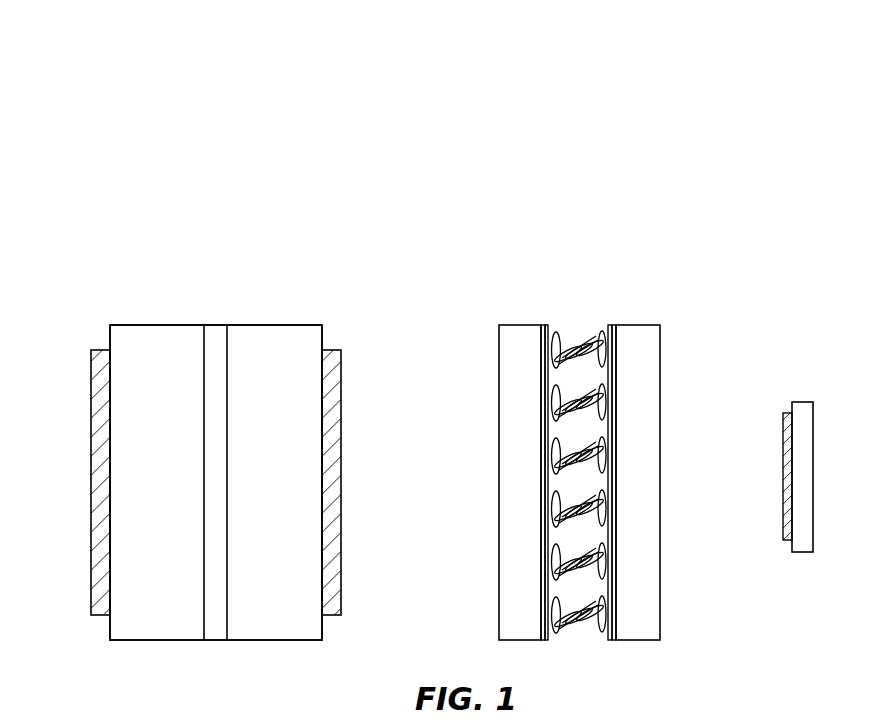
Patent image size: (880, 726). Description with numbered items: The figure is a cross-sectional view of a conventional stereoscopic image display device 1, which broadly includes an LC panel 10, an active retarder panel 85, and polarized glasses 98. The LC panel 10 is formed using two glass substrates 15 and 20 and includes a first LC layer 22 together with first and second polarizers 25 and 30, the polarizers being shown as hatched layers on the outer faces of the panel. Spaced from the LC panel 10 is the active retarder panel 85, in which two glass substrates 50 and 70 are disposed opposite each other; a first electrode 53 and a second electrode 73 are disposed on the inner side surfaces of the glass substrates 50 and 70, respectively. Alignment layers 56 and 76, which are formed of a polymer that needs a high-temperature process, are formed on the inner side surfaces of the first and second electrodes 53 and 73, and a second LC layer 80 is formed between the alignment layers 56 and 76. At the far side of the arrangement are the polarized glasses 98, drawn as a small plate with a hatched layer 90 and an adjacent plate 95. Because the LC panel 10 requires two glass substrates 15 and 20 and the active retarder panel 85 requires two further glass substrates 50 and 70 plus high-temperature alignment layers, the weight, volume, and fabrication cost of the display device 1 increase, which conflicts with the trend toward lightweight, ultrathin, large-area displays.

The stereoscopic image display device 1 is at (580, 108).
The LC panel 10 is at (280, 284).
The glass substrate 15 is at (125, 470).
The glass substrate 20 is at (245, 525).
The first LC layer 22 is at (214, 330).
The first polarizer 25 is at (98, 425).
The second polarizer 30 is at (330, 460).
The glass substrate 50 is at (510, 338).
The first electrode 53 is at (546, 330).
The alignment layer 56 is at (552, 335).
The glass substrate 70 is at (645, 336).
The second electrode 73 is at (616, 332).
The alignment layer 76 is at (611, 330).
The second LC layer 80 is at (575, 325).
The active retarder panel 85 is at (658, 236).
The terminal pad 90 is at (783, 413).
The end plate 95 is at (802, 420).
The polarized glasses 98 is at (800, 282).